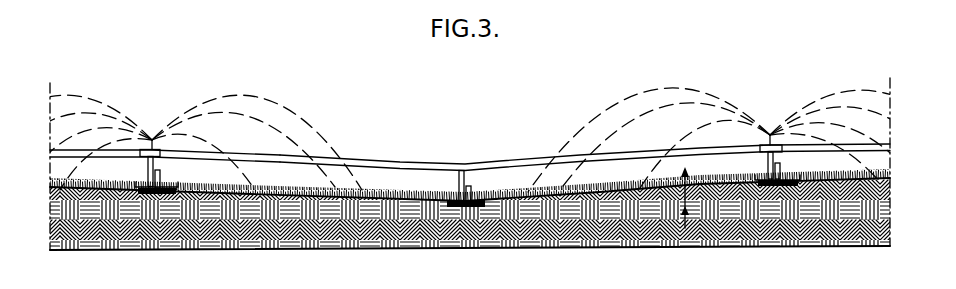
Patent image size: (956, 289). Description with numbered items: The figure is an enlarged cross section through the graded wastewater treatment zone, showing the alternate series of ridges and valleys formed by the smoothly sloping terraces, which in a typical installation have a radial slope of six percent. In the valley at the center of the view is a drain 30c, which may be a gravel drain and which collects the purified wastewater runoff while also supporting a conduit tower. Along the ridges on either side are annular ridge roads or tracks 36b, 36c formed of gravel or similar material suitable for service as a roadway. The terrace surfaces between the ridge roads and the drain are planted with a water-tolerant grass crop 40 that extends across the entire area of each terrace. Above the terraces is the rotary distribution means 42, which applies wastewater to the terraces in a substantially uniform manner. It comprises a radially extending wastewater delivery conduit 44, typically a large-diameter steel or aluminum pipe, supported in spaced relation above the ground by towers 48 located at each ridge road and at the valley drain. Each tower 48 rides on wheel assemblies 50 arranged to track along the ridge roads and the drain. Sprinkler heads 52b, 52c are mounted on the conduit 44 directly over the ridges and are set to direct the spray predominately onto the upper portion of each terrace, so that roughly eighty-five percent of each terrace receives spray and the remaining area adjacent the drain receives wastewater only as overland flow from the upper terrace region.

The drain 30c is at (460, 206).
The ridge road or track 36b is at (172, 182).
The ridge road or track 36c is at (790, 178).
The grass crop 40 is at (350, 192).
The rotary distribution means 42 is at (80, 156).
The wastewater delivery conduit 44 is at (316, 157).
The tower 48 is at (150, 170).
The wheel assembly 50 is at (160, 178).
The sprinkler head 52b is at (150, 140).
The sprinkler head 52c is at (772, 133).